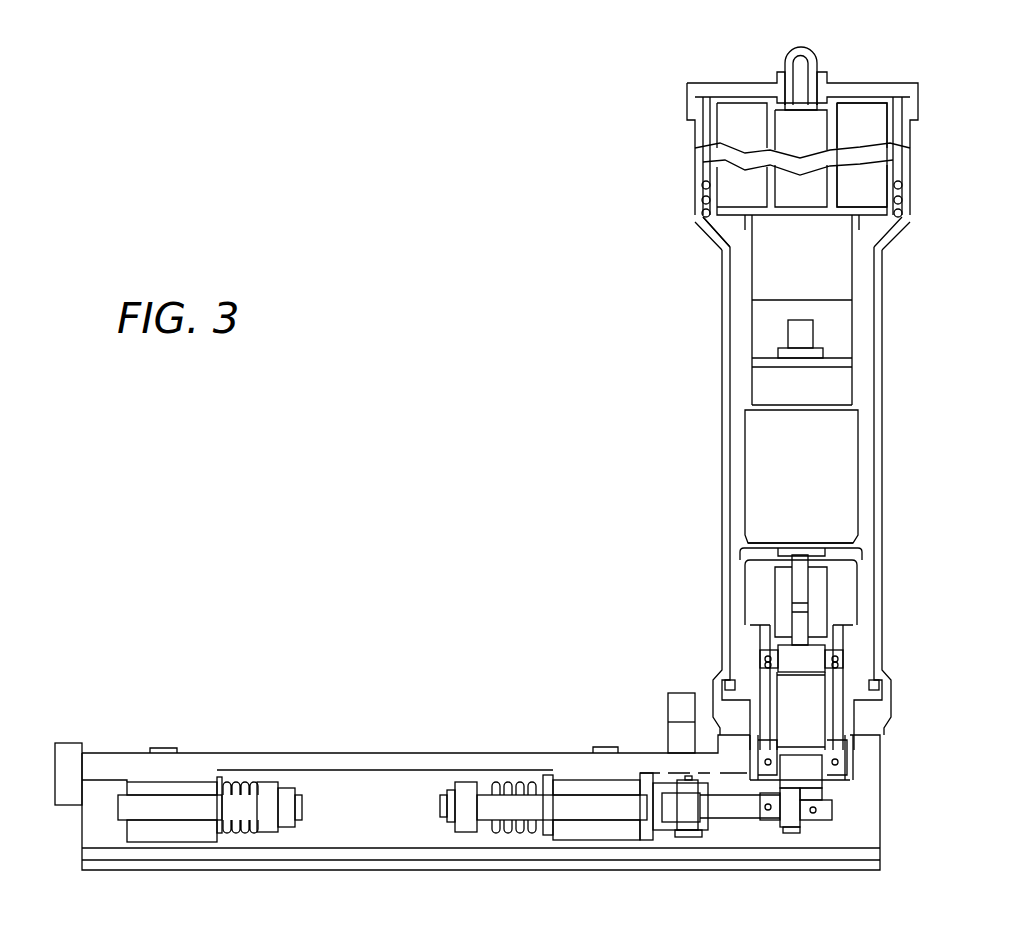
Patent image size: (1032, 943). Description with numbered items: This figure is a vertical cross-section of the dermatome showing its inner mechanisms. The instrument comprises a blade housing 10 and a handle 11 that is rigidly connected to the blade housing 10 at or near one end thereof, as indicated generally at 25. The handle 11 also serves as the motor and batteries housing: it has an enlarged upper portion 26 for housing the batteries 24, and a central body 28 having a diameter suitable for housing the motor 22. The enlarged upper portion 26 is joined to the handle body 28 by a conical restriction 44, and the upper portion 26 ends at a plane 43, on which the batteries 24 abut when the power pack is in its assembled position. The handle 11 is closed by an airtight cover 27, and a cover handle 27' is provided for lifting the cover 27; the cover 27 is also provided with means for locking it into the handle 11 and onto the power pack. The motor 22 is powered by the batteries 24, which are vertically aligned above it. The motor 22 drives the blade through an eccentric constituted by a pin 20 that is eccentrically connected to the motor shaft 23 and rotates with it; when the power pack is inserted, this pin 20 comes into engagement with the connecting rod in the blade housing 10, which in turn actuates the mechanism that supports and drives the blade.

The blade housing 10 is at (330, 752).
The handle 11 is at (884, 370).
The pin 20 is at (790, 822).
The motor 22 is at (838, 503).
The motor shaft 23 is at (803, 628).
The batteries 24 is at (865, 175).
The connection of handle to blade housing 25 is at (890, 733).
The enlarged upper portion 26 is at (702, 186).
The airtight cover 27 is at (843, 136).
The cover handle 27' is at (833, 60).
The central body 28 is at (728, 352).
The plane 43 is at (900, 218).
The conical restriction 44 is at (716, 234).